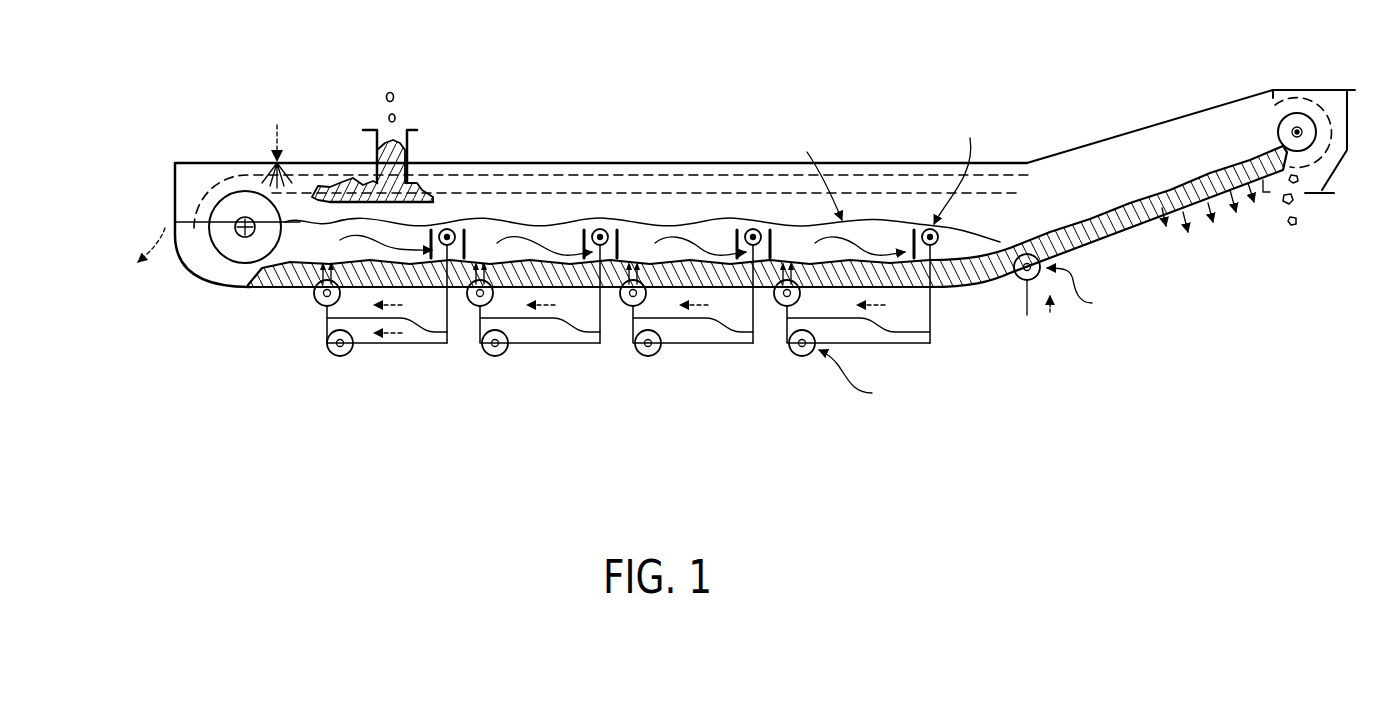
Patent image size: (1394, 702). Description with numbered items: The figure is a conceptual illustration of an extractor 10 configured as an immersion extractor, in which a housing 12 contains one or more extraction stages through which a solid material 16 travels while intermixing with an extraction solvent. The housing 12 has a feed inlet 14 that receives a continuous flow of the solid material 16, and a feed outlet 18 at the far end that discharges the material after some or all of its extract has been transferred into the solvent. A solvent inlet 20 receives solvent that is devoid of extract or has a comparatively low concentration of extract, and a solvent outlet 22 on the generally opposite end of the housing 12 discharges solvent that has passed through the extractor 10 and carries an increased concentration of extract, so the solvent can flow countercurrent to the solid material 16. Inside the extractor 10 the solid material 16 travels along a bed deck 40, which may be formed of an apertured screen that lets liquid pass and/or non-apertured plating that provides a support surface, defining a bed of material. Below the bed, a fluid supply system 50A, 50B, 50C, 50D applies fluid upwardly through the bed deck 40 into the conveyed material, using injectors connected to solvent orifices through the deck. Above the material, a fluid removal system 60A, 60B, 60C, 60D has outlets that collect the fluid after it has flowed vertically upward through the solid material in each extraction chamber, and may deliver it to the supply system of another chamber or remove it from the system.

The extractor 10 is at (113, 102).
The housing 12 is at (197, 310).
The feed inlet 14 is at (406, 157).
The solid material 16 is at (394, 93).
The feed outlet 18 is at (1288, 176).
The solvent inlet 20 is at (1014, 272).
The solvent outlet 22 is at (176, 213).
The bed deck 40 is at (252, 288).
The fluid supply system 50A is at (326, 357).
The fluid supply system 50B is at (481, 357).
The fluid supply system 50C is at (633, 360).
The fluid supply system 50D is at (787, 360).
The fluid removal system 60A is at (449, 232).
The fluid removal system 60B is at (598, 231).
The fluid removal system 60C is at (751, 231).
The fluid removal system 60D is at (928, 225).